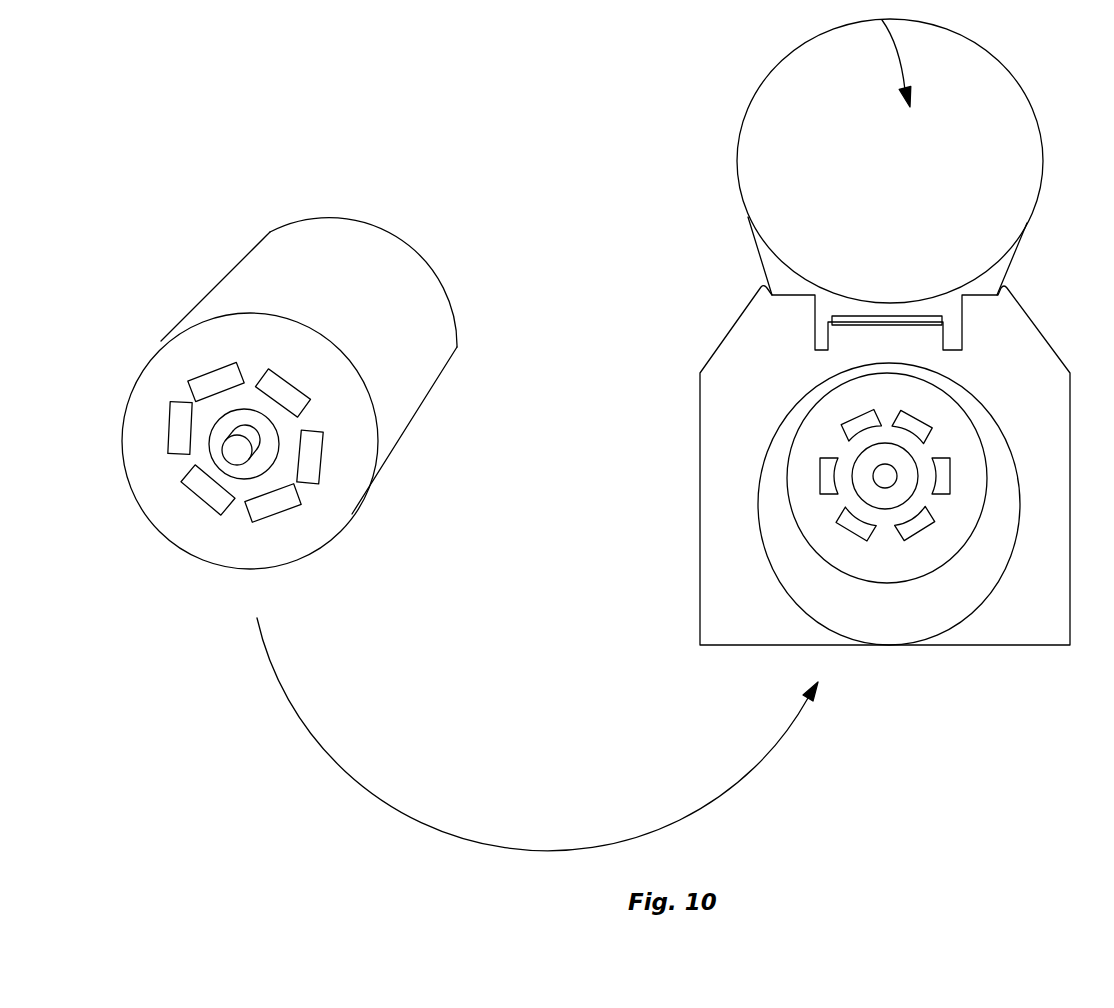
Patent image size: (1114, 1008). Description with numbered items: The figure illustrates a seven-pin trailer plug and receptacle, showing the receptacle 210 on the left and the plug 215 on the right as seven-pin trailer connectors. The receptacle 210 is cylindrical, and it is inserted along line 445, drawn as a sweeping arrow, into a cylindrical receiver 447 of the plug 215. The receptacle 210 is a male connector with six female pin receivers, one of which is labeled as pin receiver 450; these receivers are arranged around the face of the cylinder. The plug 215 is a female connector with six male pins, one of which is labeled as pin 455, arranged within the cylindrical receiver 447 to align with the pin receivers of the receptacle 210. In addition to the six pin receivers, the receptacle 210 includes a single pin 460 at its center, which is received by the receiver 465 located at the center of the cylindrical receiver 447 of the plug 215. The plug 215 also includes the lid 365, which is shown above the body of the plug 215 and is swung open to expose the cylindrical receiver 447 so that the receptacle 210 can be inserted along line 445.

The receptacle 210 is at (227, 277).
The pin 460 is at (220, 455).
The pin receiver 450 is at (203, 497).
The line 445 is at (387, 808).
The lid 365 is at (737, 143).
The plug 215 is at (1032, 320).
The cylindrical receiver 447 is at (963, 590).
The receiver 465 is at (858, 462).
The pin 455 is at (838, 523).